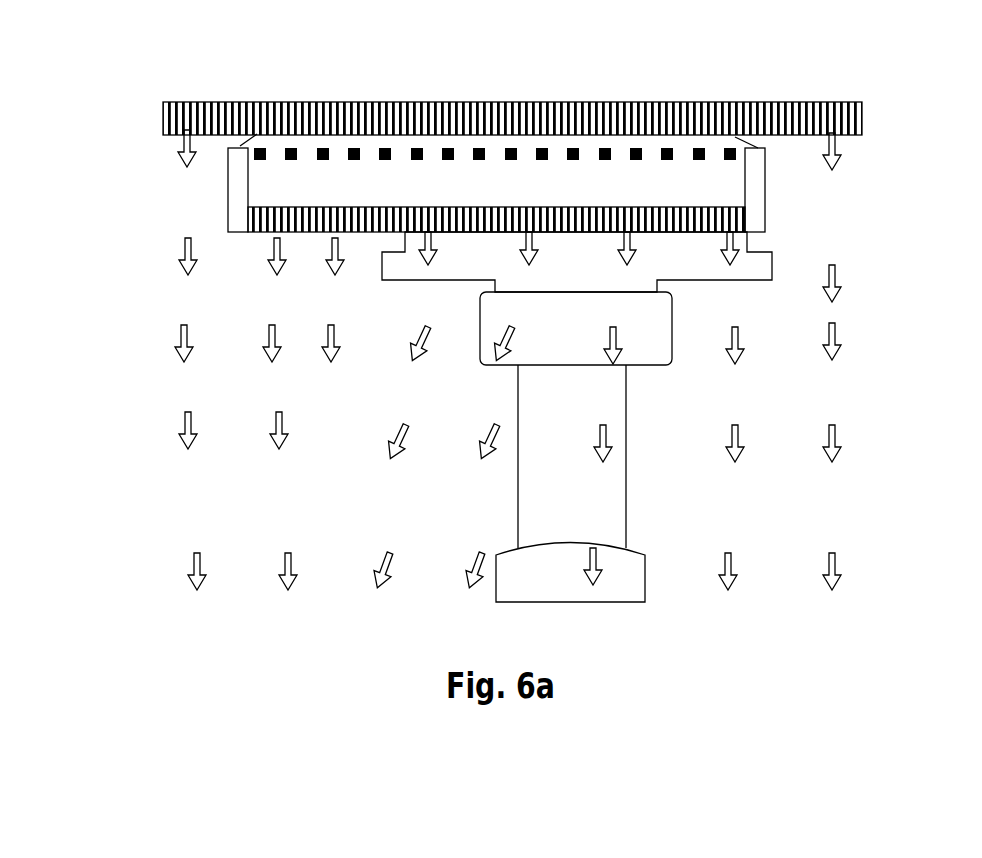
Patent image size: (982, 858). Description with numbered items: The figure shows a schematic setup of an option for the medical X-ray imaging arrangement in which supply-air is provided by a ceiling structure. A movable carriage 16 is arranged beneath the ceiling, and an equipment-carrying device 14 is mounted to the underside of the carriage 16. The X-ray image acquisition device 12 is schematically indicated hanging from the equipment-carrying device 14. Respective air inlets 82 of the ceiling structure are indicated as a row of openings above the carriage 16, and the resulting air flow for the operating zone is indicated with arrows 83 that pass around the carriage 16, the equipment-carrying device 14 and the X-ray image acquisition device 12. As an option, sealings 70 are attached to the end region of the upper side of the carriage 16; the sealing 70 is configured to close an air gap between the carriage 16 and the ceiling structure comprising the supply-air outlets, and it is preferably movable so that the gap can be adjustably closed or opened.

The X-ray image acquisition device 12 is at (462, 343).
The equipment-carrying device 14 is at (364, 272).
The movable carriage 16 is at (215, 187).
The sealing 70 is at (233, 147).
The air inlet 82 is at (657, 152).
The arrows indicating air flow 83 is at (738, 332).